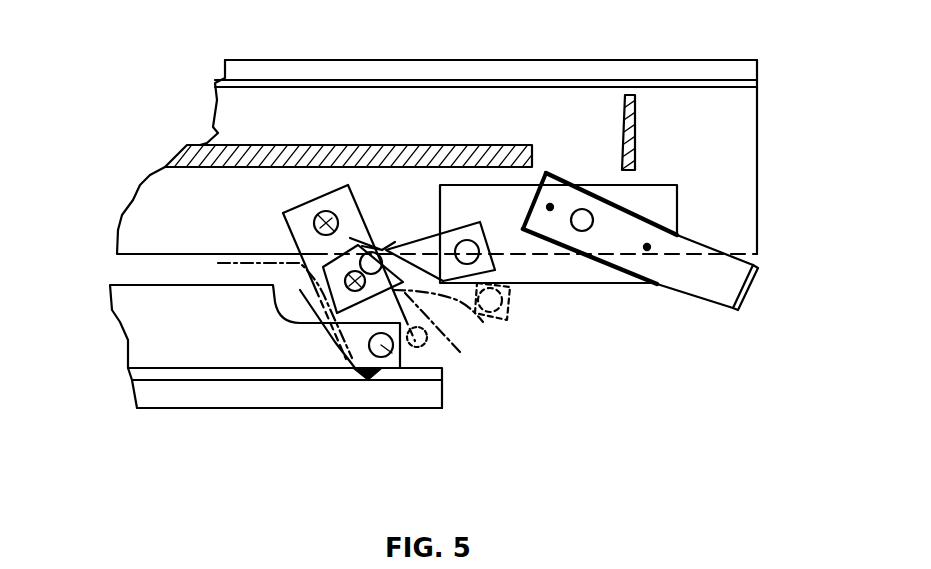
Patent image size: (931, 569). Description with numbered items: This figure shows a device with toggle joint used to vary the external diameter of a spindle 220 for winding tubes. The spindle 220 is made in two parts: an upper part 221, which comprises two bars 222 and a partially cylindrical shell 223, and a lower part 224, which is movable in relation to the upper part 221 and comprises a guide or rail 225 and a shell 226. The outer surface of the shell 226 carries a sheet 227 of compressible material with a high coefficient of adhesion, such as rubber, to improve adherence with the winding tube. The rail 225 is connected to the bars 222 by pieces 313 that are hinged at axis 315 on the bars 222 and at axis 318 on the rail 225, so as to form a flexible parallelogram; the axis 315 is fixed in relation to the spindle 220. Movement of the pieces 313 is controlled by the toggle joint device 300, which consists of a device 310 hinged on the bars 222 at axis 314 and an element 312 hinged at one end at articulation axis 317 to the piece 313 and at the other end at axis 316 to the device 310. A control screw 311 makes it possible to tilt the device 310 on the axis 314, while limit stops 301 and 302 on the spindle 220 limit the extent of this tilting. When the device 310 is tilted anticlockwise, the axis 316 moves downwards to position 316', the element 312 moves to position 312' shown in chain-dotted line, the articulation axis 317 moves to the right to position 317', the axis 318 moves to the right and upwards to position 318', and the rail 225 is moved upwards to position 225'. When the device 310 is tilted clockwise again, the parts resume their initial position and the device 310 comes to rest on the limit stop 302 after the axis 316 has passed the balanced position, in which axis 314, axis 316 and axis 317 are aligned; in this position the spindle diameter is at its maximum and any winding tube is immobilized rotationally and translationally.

The spindle 220 is at (88, 42).
The upper part 221 is at (149, 20).
The bars 222 is at (267, 105).
The shell 223 is at (270, 73).
The lower part 224 is at (27, 303).
The guide 225 is at (215, 320).
The position of rail 225' is at (546, 393).
The shell 226 is at (163, 377).
The sheet 227 is at (157, 402).
The toggle joint device 300 is at (650, 422).
The limit stop 301 is at (632, 150).
The limit stop 302 is at (450, 147).
The device 310 is at (617, 273).
The control screw 311 is at (733, 287).
The element 312 is at (558, 255).
The position of element 312' is at (564, 345).
The pieces 313 is at (340, 196).
The axis 314 is at (582, 213).
The axis 315 is at (320, 215).
The axis 316 is at (454, 234).
The position of axis 316' is at (499, 346).
The articulation axis 317 is at (277, 263).
The position of articulation axis 317' is at (325, 278).
The axis 318 is at (366, 374).
The position of axis 318' is at (485, 387).